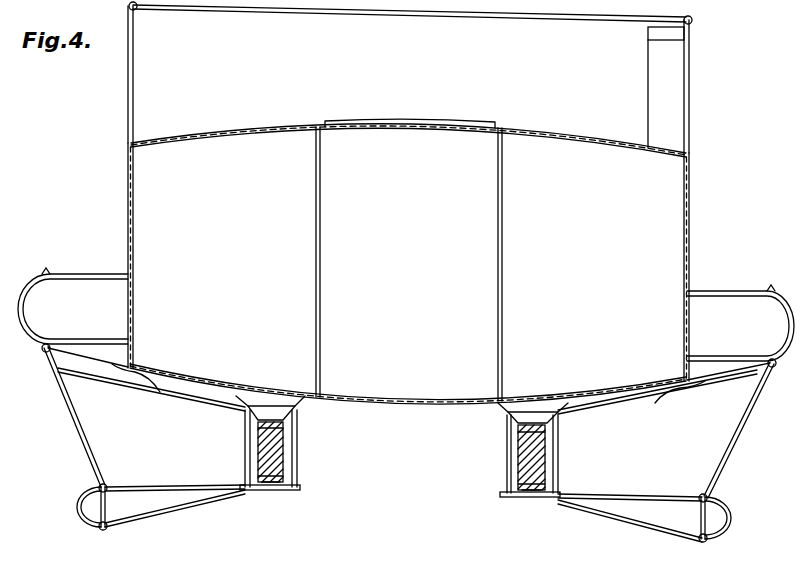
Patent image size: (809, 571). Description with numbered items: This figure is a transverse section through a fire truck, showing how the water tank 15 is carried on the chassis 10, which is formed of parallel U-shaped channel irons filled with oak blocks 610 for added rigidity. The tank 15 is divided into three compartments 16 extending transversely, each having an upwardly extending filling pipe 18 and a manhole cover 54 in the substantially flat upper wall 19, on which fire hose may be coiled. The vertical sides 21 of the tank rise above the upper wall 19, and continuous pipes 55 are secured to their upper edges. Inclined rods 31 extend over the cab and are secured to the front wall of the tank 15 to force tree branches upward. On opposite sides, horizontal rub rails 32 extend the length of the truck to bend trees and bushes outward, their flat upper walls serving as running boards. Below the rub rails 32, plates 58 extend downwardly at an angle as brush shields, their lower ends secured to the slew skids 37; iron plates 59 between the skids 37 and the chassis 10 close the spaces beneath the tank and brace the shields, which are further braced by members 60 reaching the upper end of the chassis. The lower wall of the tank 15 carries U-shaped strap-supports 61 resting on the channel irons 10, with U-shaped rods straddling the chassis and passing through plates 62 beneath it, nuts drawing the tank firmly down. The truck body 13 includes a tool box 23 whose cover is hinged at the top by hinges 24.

The chassis 10 is at (257, 451).
The truck body 13 is at (77, 425).
The water tank 15 is at (127, 210).
The compartment 16 is at (515, 225).
The filling pipe 18 is at (672, 78).
The upper wall 19 is at (266, 128).
The vertical sides 21 is at (128, 113).
The tool box 23 is at (590, 515).
The hinges 24 is at (764, 395).
The inclined rods 31 is at (162, 65).
The rub rails 32 is at (44, 275).
The slew skids 37 is at (80, 508).
The manhole covers 54 is at (420, 124).
The continuous pipes 55 is at (129, 8).
The plates 58 is at (90, 455).
The iron plates 59 is at (170, 492).
The member 60 is at (158, 394).
The U-shaped strap-supports 61 is at (293, 420).
The plates 62 is at (302, 488).
The oak blocks 610 is at (272, 480).